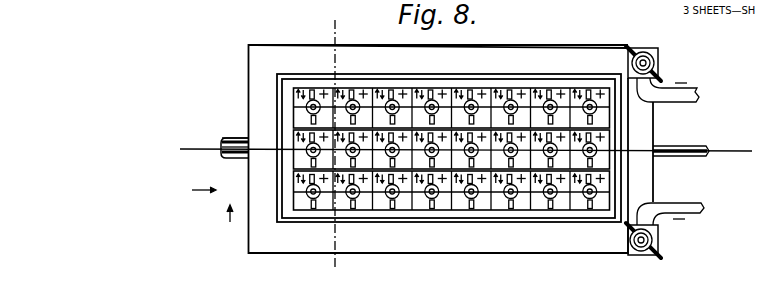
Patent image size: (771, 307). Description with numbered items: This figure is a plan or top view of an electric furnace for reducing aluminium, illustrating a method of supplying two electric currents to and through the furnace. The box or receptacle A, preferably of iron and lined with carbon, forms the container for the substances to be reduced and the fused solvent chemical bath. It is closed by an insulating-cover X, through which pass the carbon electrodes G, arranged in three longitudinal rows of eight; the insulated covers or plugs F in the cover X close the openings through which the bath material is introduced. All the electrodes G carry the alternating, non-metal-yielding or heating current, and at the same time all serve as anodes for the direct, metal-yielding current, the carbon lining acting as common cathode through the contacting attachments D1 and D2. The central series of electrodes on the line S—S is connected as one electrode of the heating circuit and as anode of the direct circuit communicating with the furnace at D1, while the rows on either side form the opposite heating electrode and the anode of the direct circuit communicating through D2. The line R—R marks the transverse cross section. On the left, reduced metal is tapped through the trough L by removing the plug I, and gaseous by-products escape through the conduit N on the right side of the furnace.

The box or receptacle A is at (248, 240).
The insulating-cover X is at (293, 195).
The insulated-covers or plugs F is at (433, 100).
The electrodes G is at (429, 104).
The trough L is at (222, 153).
The plug I is at (244, 142).
The section line S— S is at (463, 150).
The section line R— R is at (334, 148).
The conduit N is at (689, 150).
The contacting attachment D1 is at (659, 63).
The contacting attachment D2 is at (659, 240).